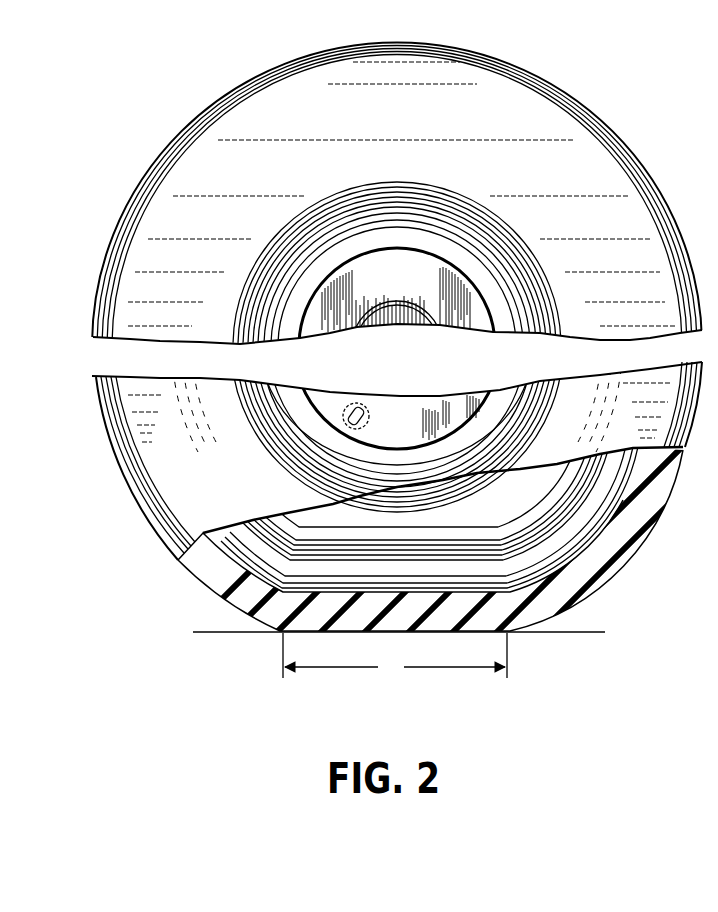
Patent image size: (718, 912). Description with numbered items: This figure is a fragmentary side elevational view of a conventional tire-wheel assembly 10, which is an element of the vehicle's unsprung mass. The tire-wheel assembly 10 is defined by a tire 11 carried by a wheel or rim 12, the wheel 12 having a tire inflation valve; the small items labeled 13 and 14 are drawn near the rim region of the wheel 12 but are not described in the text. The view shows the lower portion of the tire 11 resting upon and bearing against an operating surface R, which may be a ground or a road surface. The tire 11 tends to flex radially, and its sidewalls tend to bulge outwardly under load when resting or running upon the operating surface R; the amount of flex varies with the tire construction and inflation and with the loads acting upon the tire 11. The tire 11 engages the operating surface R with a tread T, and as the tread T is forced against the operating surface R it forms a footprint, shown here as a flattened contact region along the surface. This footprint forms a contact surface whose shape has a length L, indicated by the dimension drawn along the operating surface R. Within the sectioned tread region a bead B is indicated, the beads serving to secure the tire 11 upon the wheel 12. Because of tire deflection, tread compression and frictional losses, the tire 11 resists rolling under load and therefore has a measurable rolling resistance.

The tire-wheel assembly 10 is at (608, 83).
The tire 11 is at (630, 211).
The wheel 12 is at (373, 252).
The tire sensor module 13 is at (369, 425).
The sensor 14 is at (357, 404).
The length L is at (395, 655).
The tread T is at (352, 630).
The bead B is at (451, 610).
The operating surface R is at (558, 632).